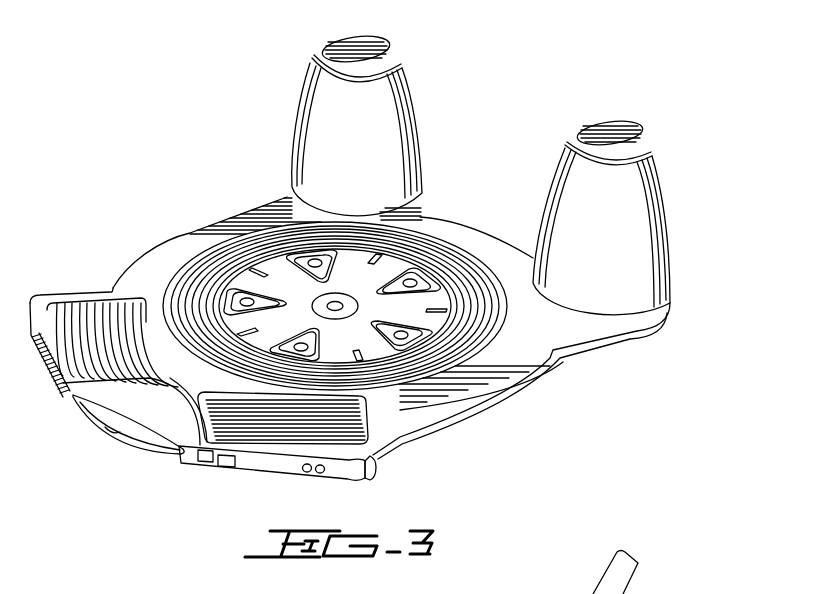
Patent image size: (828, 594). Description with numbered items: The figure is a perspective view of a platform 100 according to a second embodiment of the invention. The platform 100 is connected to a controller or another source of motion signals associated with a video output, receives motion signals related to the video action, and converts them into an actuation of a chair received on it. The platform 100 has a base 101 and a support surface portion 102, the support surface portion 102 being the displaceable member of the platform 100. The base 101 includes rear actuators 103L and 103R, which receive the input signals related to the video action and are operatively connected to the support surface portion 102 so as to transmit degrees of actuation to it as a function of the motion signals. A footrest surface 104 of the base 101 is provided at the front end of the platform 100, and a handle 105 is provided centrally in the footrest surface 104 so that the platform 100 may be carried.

The platform 100 is at (144, 180).
The base 101 is at (478, 386).
The support surface portion 102 is at (415, 272).
The rear actuator 103R is at (393, 97).
The rear actuator 103L is at (612, 198).
The footrest surface 104 is at (233, 422).
The handle 105 is at (117, 432).